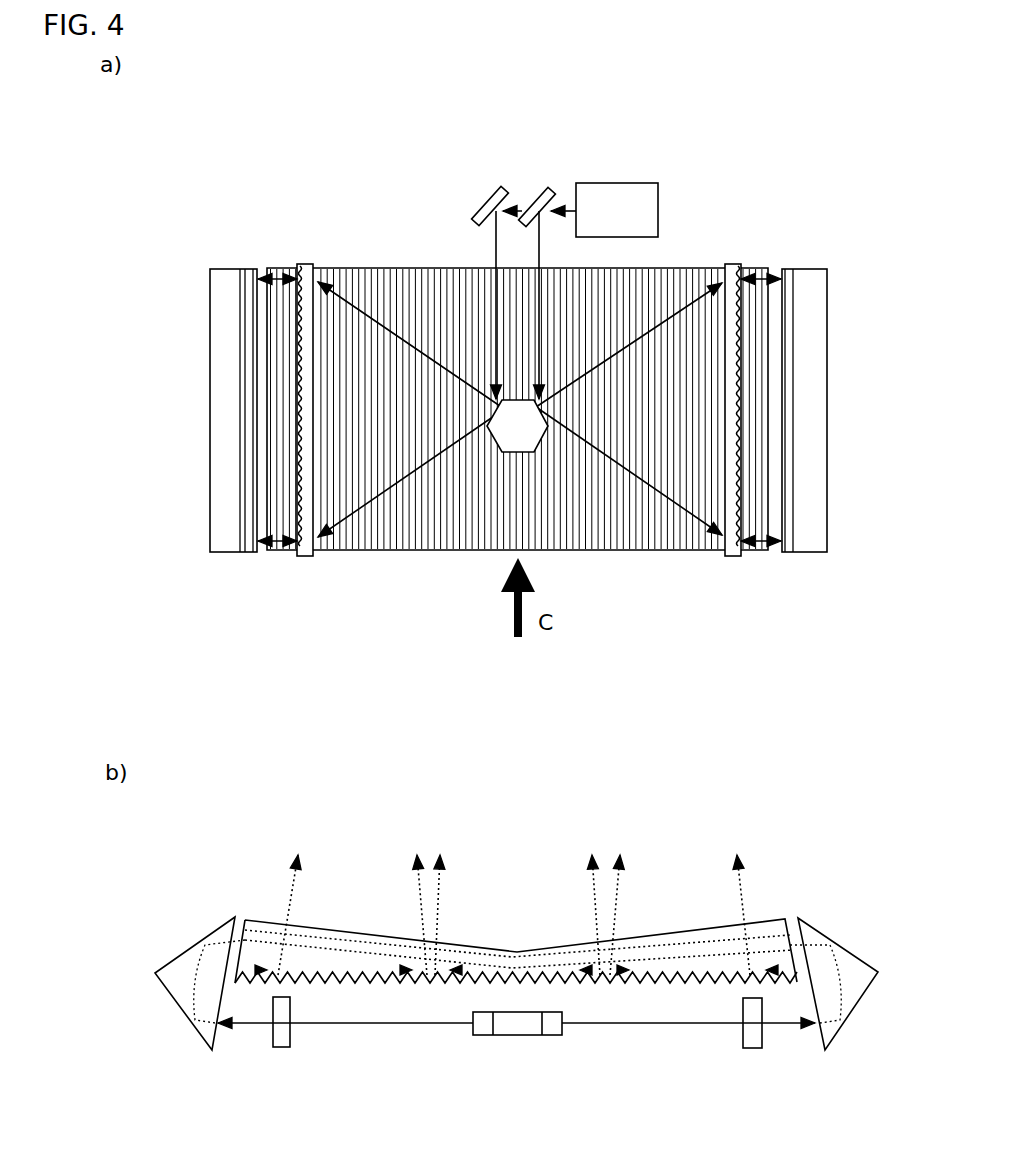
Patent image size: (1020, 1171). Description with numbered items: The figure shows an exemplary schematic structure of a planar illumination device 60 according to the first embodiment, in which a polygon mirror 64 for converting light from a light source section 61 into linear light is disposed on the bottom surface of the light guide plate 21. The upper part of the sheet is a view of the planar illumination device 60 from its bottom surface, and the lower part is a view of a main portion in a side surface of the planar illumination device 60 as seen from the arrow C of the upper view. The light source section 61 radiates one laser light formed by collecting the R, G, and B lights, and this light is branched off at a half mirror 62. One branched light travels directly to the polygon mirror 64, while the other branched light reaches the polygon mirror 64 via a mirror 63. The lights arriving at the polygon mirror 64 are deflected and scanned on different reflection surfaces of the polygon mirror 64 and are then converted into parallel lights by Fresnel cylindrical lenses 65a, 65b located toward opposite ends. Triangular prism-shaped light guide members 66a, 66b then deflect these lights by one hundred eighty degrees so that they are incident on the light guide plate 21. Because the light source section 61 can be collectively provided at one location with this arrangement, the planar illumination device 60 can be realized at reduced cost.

The planar illumination device 60 is at (220, 124).
The light source section 61 is at (615, 198).
The half mirror 62 is at (540, 195).
The mirror 63 is at (497, 195).
The polygon mirror 64 is at (520, 440).
The Fresnel cylindrical lens 65a is at (733, 543).
The Fresnel cylindrical lens 65b is at (303, 543).
The triangular prism-shaped light guide member 66a is at (808, 513).
The triangular prism-shaped light guide member 66b is at (232, 540).
The light guide plate 21 is at (660, 957).